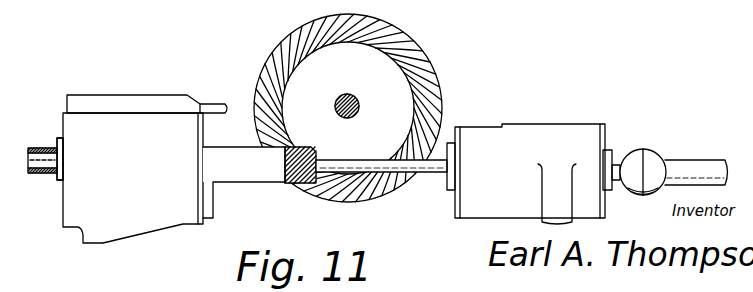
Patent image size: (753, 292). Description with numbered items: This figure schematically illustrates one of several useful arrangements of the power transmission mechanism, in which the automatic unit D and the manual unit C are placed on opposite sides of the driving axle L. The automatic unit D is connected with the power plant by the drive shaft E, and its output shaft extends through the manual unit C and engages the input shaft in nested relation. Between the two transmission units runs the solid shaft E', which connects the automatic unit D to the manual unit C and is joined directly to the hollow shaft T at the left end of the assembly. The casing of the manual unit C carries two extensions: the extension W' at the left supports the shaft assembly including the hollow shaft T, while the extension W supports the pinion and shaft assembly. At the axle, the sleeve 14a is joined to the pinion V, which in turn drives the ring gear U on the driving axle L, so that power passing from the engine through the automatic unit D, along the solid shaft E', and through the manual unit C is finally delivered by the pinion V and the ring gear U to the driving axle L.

The ring gear U is at (423, 76).
The driving axle L is at (360, 105).
The manual unit C is at (140, 225).
The hollow shaft T is at (38, 148).
The casing extension W' is at (45, 178).
The casing extension W is at (244, 168).
The pinion V is at (306, 148).
The sleeve 14a is at (285, 184).
The solid shaft E' is at (381, 198).
The automatic unit D is at (473, 209).
The drive shaft E is at (364, 164).